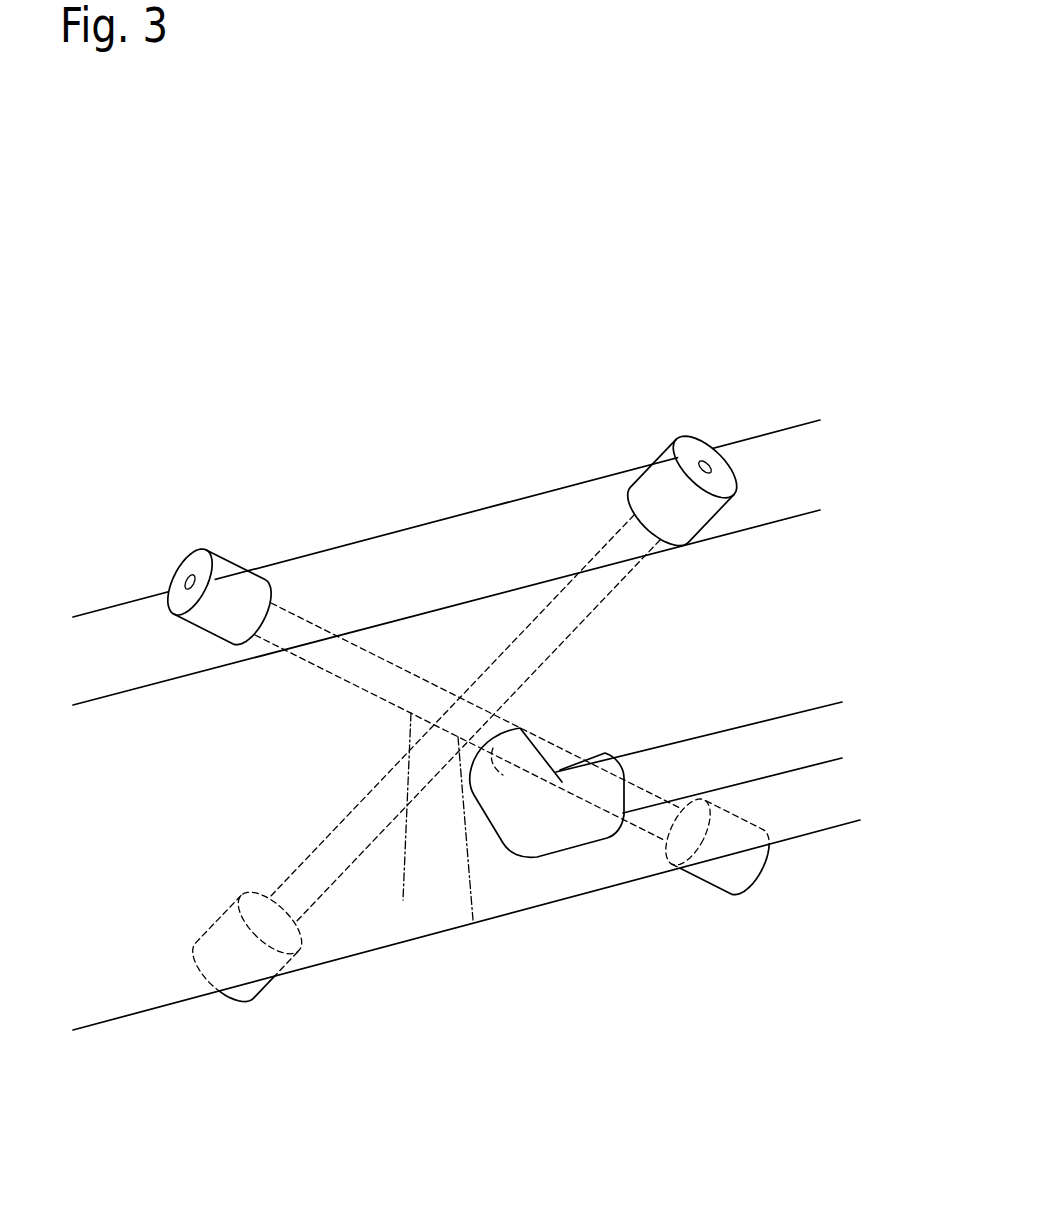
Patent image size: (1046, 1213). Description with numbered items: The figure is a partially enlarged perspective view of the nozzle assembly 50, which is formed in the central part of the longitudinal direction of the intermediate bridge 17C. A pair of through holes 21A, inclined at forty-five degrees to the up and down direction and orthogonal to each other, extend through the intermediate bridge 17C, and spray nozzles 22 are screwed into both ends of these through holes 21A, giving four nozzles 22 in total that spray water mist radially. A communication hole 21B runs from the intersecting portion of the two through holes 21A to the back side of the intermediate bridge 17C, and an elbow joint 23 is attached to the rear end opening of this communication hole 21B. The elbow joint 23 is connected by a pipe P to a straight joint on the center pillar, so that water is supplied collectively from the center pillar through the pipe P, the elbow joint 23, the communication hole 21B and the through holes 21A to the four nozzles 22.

The nozzle assembly 50 is at (484, 448).
The intermediate bridge 17C is at (120, 622).
The pipe P is at (781, 733).
The nozzles 22 is at (232, 572).
The elbow joint 23 is at (598, 756).
The through holes 21A is at (357, 860).
The communication hole 21B is at (473, 920).